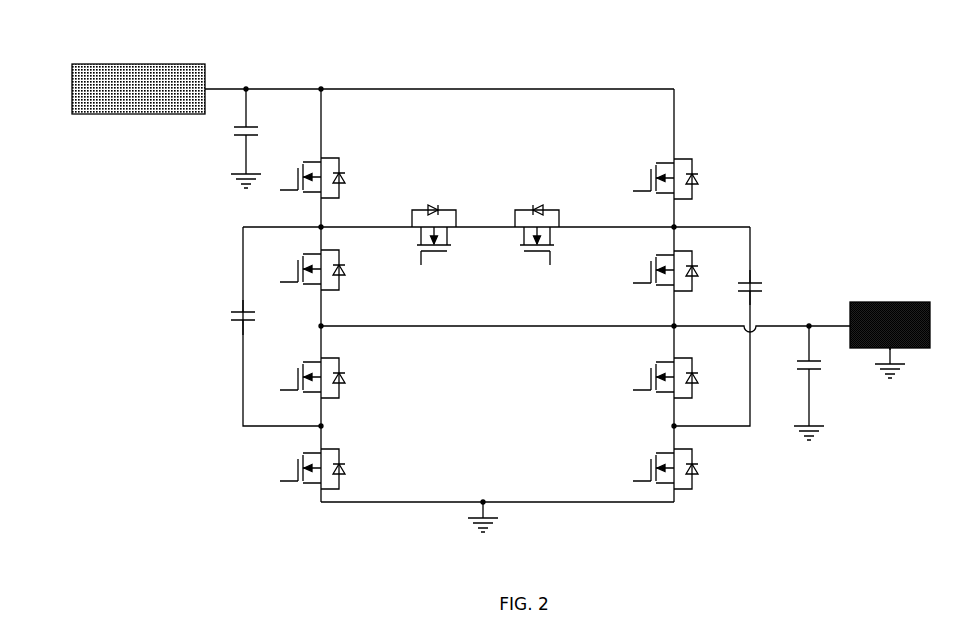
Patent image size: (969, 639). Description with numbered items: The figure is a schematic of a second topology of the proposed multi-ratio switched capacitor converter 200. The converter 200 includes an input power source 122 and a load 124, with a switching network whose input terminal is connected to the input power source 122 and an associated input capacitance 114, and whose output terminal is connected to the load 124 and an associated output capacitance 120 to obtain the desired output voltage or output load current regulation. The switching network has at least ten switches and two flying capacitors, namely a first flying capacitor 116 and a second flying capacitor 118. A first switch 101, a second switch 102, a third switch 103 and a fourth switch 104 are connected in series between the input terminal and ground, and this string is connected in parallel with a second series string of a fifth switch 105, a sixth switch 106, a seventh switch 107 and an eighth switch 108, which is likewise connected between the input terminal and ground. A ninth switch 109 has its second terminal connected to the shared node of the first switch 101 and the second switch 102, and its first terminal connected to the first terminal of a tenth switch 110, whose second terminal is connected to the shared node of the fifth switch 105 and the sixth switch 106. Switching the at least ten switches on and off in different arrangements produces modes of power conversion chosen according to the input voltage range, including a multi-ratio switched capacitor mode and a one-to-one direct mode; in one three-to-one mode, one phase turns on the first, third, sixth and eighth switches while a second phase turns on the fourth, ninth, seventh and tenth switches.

The multi-ratio switched capacitor converter 200 is at (68, 44).
The input power source 122 is at (138, 89).
The input capacitance 114 is at (254, 138).
The first switch 101 is at (319, 172).
The second switch 102 is at (323, 266).
The third switch 103 is at (323, 376).
The fourth switch 104 is at (323, 466).
The fifth switch 105 is at (655, 184).
The sixth switch 106 is at (653, 275).
The seventh switch 107 is at (653, 373).
The eighth switch 108 is at (653, 466).
The ninth switch 109 is at (434, 230).
The tenth switch 110 is at (536, 230).
The first flying capacitor 116 is at (227, 319).
The second flying capacitor 118 is at (749, 287).
The output capacitance 120 is at (795, 383).
The load 124 is at (890, 340).